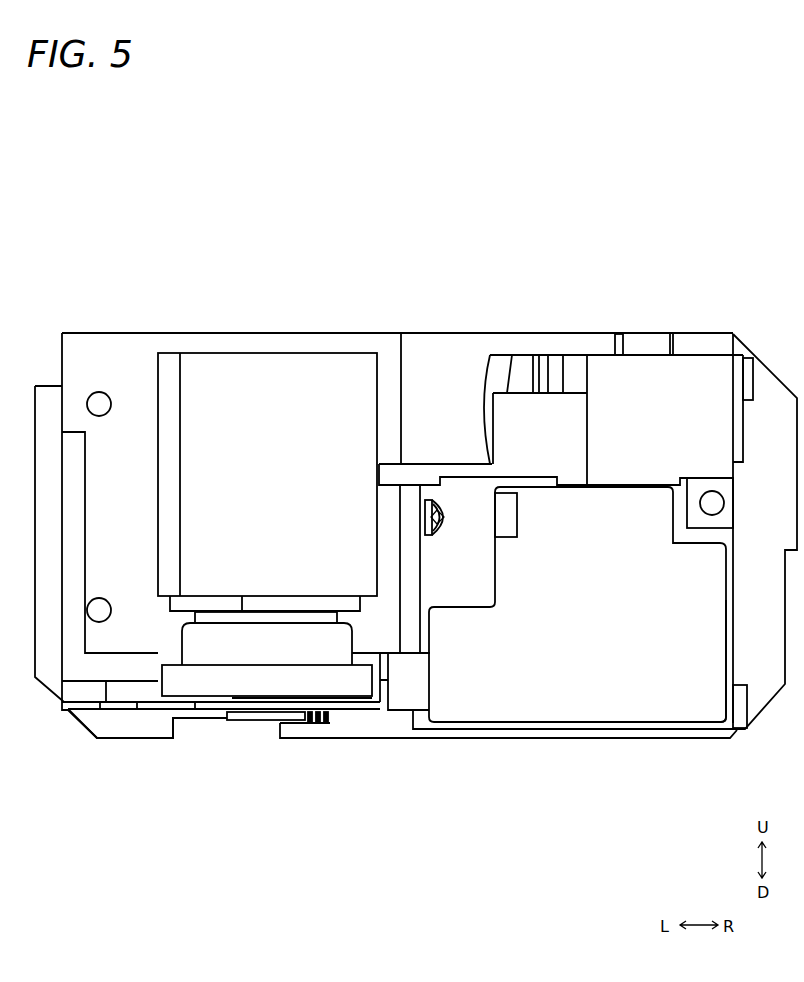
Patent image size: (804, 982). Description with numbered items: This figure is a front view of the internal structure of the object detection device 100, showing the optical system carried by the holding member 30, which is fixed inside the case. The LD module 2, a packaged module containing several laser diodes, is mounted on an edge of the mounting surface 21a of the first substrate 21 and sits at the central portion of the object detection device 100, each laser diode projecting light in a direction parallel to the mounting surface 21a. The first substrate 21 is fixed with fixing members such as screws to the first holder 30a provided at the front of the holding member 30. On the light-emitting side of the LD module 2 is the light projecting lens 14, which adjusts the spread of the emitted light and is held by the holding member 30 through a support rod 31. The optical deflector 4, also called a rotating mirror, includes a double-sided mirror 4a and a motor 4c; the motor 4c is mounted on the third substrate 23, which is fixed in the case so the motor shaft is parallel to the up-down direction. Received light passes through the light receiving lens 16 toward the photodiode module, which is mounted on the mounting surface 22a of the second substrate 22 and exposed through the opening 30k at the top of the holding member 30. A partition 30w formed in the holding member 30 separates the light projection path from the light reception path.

The object detection device 100 is at (87, 206).
The holding member 30 is at (182, 332).
The optical deflector 4 is at (267, 445).
The double-sided mirror 4a is at (268, 353).
The motor 4c is at (263, 645).
The partition 30w is at (438, 462).
The light receiving lens 16 is at (502, 353).
The opening 30k is at (643, 353).
The second substrate 22 is at (642, 328).
The mounting surface of second substrate 22a is at (778, 403).
The LD module 2 is at (517, 515).
The support rod 31 is at (451, 545).
The light projecting lens 14 is at (448, 528).
The third substrate 23 is at (153, 712).
The first substrate 21 is at (577, 634).
The mounting surface of first substrate 21a is at (567, 657).
The first holder 30a is at (725, 730).